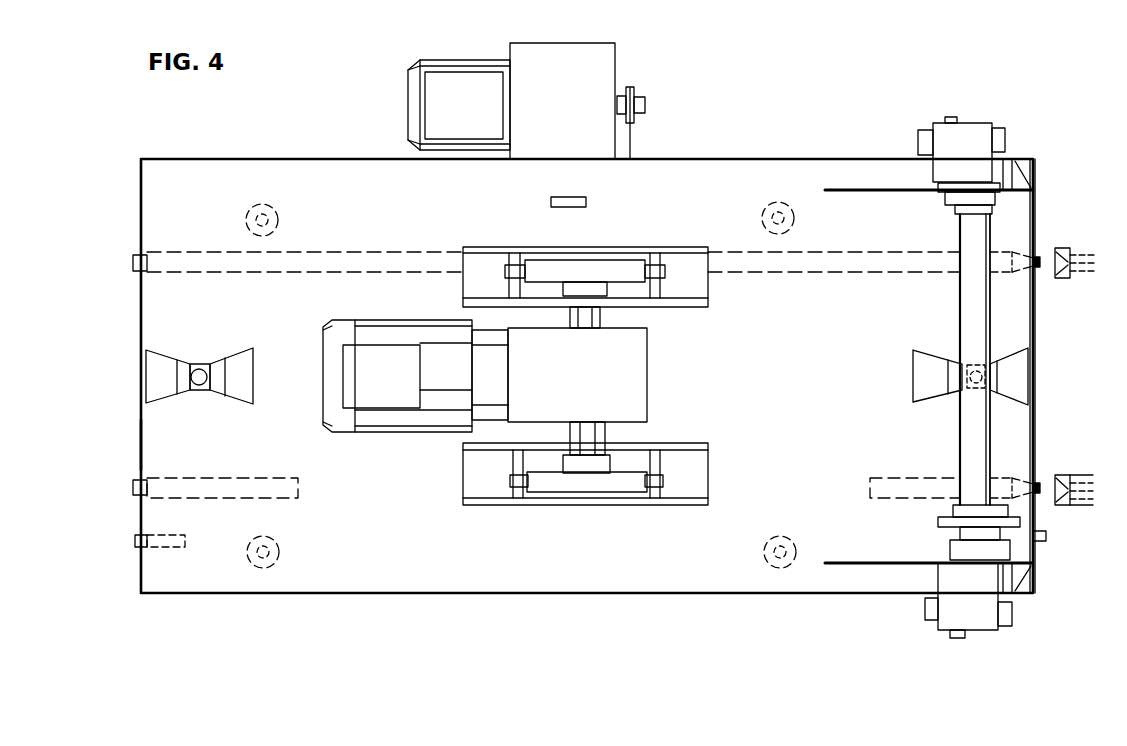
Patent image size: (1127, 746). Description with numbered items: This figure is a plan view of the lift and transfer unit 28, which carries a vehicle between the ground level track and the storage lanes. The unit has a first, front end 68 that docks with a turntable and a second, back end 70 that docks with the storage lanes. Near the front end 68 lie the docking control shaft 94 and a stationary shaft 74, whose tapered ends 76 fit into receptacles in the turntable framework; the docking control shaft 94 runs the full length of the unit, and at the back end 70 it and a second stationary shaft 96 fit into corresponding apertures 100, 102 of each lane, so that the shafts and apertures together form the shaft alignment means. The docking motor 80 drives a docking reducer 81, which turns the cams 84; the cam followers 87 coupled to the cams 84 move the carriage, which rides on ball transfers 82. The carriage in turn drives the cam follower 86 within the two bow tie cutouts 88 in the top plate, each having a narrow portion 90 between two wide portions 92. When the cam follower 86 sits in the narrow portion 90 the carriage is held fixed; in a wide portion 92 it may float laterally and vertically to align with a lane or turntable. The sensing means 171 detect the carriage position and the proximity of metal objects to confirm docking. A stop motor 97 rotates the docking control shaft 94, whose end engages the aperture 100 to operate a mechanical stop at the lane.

The lift and transfer unit 28 is at (96, 166).
The first, front end 68 is at (140, 449).
The second, back end 70 is at (1036, 449).
The stationary shaft 74 is at (190, 487).
The tapered ends 76 is at (135, 268).
The docking motor 80 is at (382, 395).
The docking reducer 81 is at (633, 396).
The ball transfers 82 is at (252, 212).
The cams 84 is at (606, 272).
The cam follower 86 is at (194, 369).
The cam followers 87 is at (510, 270).
The bow tie cutouts 88 is at (589, 365).
The narrow portion 90 is at (197, 384).
The wide portions 92 is at (166, 395).
The docking control shaft 94 is at (170, 265).
The stationary shaft 96 is at (906, 488).
The stop motor 97 is at (461, 86).
The aperture 100 is at (1063, 277).
The aperture 102 is at (1080, 506).
The sensing means 171 is at (584, 198).